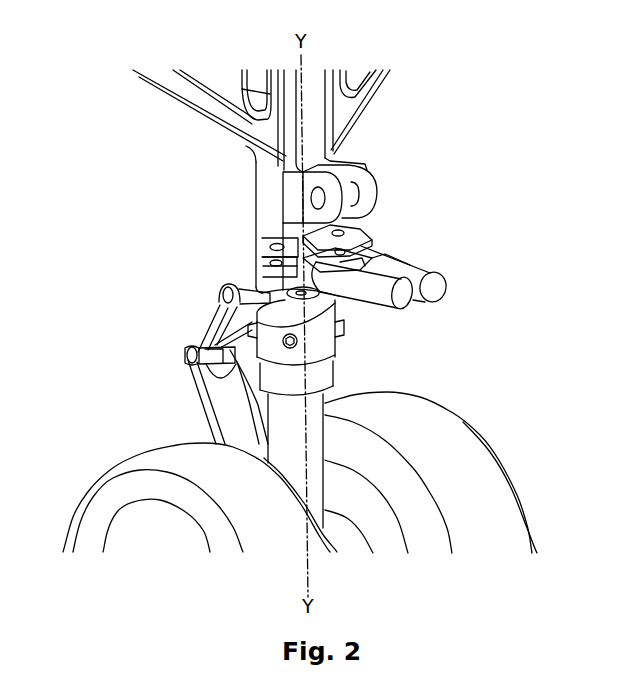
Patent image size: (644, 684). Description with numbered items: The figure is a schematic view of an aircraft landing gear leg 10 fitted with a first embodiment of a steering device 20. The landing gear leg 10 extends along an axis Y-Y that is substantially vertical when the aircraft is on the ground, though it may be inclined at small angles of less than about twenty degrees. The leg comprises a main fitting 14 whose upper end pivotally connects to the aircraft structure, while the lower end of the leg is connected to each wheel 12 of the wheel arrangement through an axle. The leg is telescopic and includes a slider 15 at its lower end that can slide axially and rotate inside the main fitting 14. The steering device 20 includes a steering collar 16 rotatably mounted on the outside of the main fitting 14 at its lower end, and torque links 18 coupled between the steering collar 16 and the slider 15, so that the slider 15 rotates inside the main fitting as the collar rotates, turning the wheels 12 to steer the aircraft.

The landing gear leg 10 is at (473, 127).
The wheel 12 is at (438, 432).
The main fitting 14 is at (267, 212).
The slider 15 is at (324, 393).
The steering collar 16 is at (338, 308).
The torque links 18 is at (195, 373).
The steering device 20 is at (449, 242).